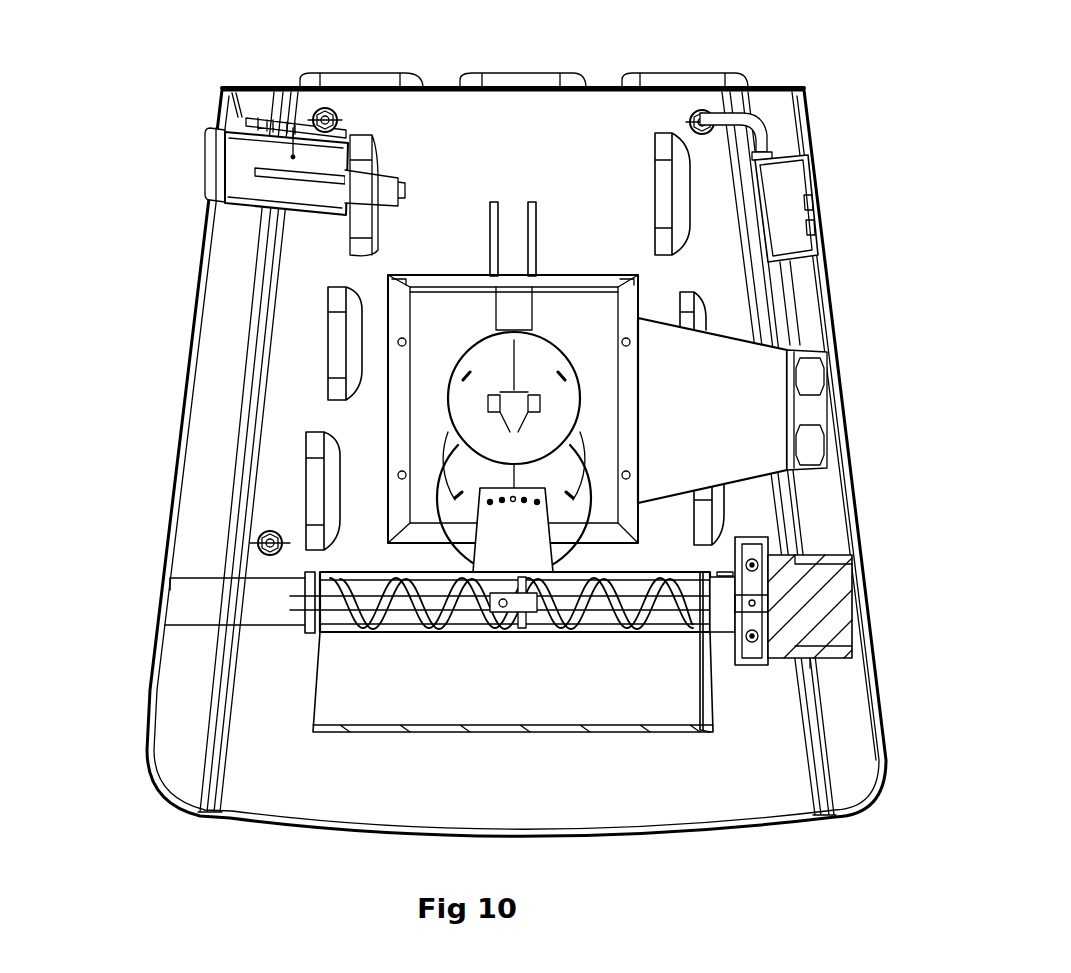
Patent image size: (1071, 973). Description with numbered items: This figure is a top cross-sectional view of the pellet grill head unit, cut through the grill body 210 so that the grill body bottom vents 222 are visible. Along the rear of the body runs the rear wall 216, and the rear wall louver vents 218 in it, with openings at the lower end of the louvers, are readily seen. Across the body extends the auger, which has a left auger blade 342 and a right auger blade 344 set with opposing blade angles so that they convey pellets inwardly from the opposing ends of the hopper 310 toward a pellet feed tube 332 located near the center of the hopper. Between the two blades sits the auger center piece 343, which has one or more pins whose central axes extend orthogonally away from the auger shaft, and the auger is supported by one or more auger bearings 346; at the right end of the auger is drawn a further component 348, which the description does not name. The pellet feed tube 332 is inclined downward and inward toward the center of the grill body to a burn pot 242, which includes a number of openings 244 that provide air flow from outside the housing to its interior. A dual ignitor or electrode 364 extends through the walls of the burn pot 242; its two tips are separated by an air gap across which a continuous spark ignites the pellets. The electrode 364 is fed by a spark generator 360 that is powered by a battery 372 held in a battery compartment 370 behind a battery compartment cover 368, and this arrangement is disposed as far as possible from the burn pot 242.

The grill body 210 is at (186, 287).
The rear wall 216 is at (774, 90).
The rear wall louver vents 218 is at (660, 76).
The grill body bottom vents 222 is at (340, 295).
The burn pot 242 is at (560, 463).
The openings 244 is at (560, 372).
The hopper 310 is at (360, 738).
The pellet feed tube 332 is at (490, 523).
The left auger blade 342 is at (322, 637).
The auger center piece 343 is at (527, 612).
The right auger blade 344 is at (657, 622).
The auger bearings 346 is at (313, 589).
The auger motor 348 is at (821, 618).
The spark generator 360 is at (405, 188).
The electrode 364 is at (489, 405).
The battery compartment cover 368 is at (203, 164).
The battery compartment 370 is at (236, 114).
The battery 372 is at (322, 112).